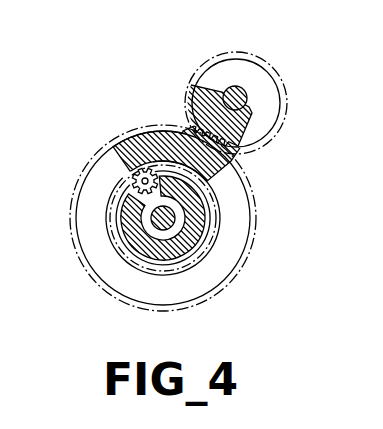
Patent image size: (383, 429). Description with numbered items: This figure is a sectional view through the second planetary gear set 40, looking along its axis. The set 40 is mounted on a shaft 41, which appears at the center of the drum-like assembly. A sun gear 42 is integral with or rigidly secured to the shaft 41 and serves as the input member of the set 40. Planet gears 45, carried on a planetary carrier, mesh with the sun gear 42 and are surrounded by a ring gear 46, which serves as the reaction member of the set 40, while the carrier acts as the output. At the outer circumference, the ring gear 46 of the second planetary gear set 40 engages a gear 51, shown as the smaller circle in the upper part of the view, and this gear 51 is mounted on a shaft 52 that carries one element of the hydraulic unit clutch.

The second planetary gear set 40 is at (239, 219).
The shaft 41 is at (161, 229).
The sun gear 42 is at (150, 208).
The planet gears 45 is at (136, 185).
The ring gear 46 is at (223, 267).
The gear 51 is at (270, 95).
The shaft 52 is at (240, 86).